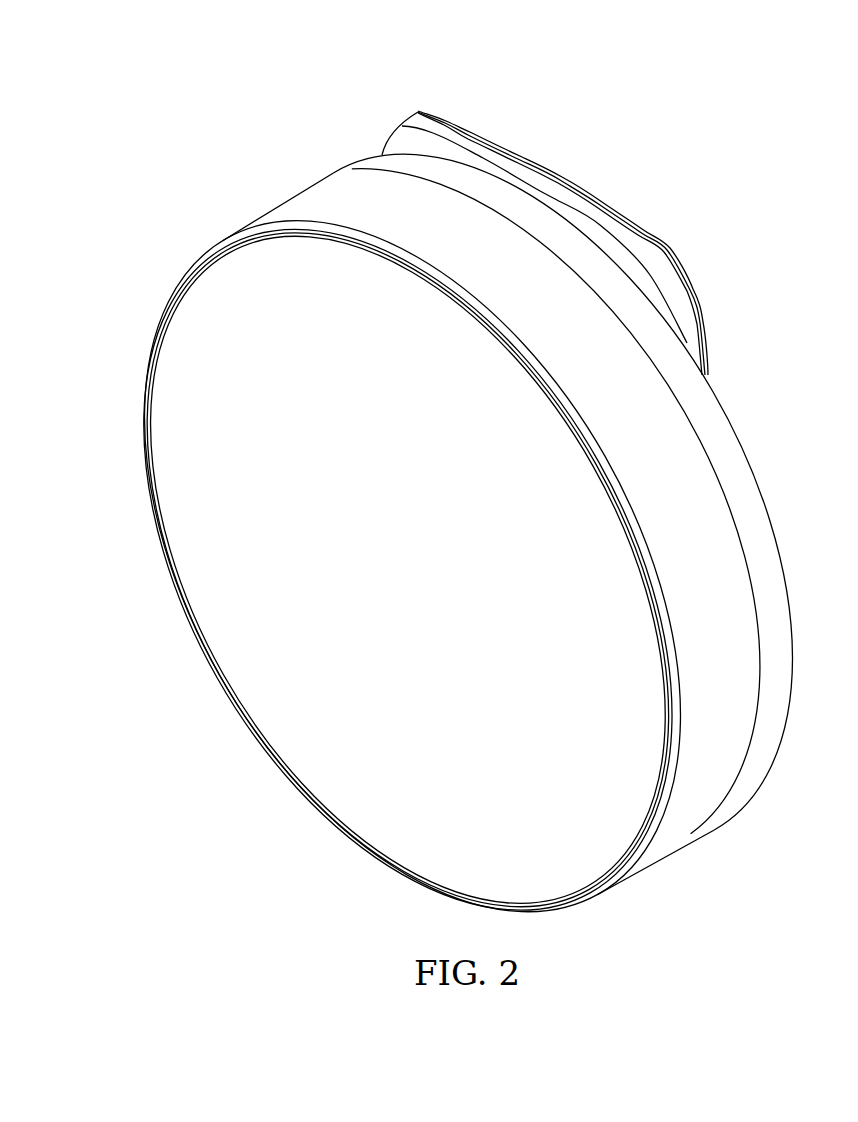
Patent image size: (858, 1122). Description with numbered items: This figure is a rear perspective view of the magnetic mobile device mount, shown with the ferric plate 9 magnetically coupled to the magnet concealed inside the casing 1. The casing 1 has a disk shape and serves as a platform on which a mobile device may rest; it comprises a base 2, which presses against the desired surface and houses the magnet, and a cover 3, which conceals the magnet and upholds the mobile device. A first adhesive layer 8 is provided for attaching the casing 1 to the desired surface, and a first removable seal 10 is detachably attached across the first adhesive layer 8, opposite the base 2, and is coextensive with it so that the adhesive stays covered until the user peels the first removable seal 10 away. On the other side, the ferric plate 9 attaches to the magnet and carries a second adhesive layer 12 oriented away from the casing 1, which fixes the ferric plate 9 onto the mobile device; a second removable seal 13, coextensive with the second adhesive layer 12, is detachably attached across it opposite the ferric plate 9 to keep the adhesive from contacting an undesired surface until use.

The casing 1 is at (440, 533).
The base 2 is at (287, 212).
The cover 3 is at (753, 538).
The first adhesive layer 8 is at (667, 680).
The ferric plate 9 is at (418, 113).
The first removable seal 10 is at (207, 608).
The second adhesive layer 12 is at (630, 220).
The second removable seal 13 is at (683, 260).